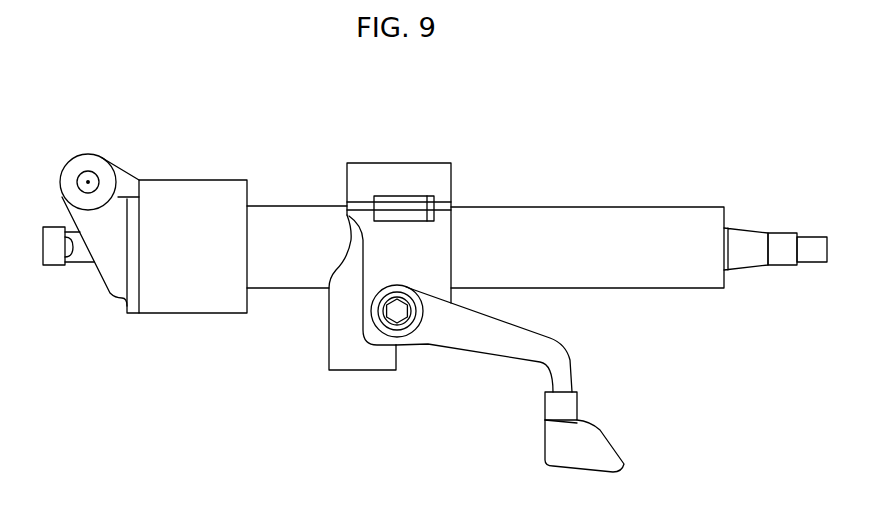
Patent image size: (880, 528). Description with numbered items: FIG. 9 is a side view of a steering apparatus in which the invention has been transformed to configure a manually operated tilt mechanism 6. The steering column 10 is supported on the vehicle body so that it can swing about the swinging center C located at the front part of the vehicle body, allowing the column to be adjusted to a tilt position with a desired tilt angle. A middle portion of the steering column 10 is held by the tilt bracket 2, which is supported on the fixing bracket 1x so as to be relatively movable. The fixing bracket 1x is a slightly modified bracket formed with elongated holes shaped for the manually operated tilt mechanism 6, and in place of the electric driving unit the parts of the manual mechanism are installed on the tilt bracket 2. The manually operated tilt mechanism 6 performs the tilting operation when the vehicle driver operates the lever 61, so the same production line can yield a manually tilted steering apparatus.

The swinging center C is at (88, 182).
The steering column 10 is at (640, 207).
The fixing bracket 1x is at (451, 183).
The tilt bracket 2 is at (342, 345).
The manually operated tilt mechanism 6 is at (433, 360).
The lever 61 is at (553, 352).